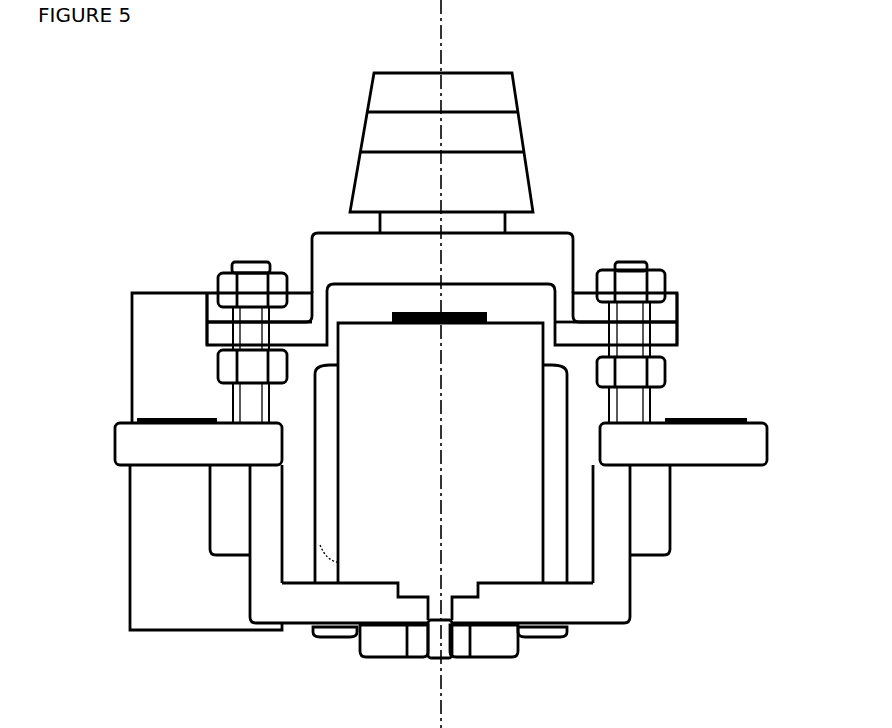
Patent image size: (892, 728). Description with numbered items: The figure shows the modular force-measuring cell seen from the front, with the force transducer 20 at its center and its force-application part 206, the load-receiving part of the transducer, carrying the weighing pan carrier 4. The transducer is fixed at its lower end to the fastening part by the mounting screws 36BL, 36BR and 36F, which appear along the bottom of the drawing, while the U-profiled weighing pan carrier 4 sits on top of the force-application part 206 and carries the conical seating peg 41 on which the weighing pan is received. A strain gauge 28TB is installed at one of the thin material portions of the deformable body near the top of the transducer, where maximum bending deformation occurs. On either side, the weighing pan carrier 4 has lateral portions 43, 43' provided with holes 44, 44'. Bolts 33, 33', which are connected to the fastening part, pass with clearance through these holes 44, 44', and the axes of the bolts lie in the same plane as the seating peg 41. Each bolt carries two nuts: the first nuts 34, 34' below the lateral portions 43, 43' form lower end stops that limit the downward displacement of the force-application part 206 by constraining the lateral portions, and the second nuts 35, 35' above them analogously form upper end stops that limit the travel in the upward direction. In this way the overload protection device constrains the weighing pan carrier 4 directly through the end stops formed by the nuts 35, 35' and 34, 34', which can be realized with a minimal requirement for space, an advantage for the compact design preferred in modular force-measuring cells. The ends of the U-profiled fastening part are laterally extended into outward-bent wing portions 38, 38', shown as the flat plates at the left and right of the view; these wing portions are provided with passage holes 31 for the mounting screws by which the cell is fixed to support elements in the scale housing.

The weighing pan carrier 4 is at (574, 217).
The conical seating peg 41 is at (380, 131).
The strain gauge 28TB is at (405, 308).
The force transducer 20 is at (440, 511).
The force-application part 206 is at (383, 515).
The hole 44' is at (345, 474).
The hole 44 is at (544, 474).
The second nut 35' is at (187, 255).
The second nut 35 is at (674, 267).
The lateral portion 43' is at (201, 296).
The lateral portion 43 is at (662, 312).
The first nut 34' is at (188, 335).
The first nut 34 is at (674, 351).
The bolt 33' is at (179, 431).
The bolt 33 is at (680, 428).
The passage hole 31 is at (170, 407).
The wing portion 38' is at (185, 459).
The wing portion 38 is at (693, 463).
The mounting screw 36BL is at (388, 663).
The mounting screw 36BR is at (486, 663).
The mounting screw 36F is at (443, 667).